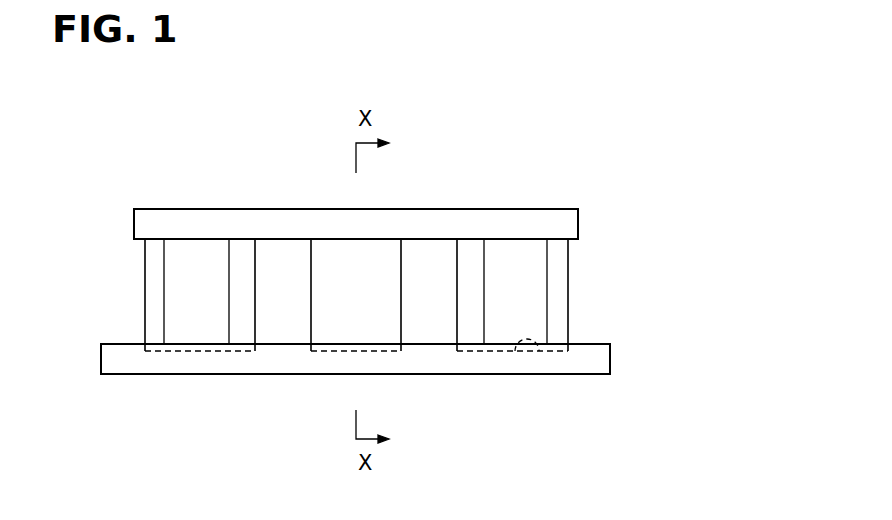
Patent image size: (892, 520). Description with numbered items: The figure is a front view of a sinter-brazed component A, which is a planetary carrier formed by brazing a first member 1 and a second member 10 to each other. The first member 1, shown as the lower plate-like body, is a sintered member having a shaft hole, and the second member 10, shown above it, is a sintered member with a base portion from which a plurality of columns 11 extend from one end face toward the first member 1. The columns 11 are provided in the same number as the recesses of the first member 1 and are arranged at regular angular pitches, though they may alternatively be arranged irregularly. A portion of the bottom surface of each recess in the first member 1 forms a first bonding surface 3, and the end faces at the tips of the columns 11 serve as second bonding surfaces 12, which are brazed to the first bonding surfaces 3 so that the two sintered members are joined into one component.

The first member 1 is at (611, 358).
The second member 10 is at (549, 209).
The columns 11 is at (565, 293).
The second bonding surfaces 12 is at (487, 351).
The first bonding surface 3 is at (540, 343).
The sinter-brazed component A is at (437, 194).